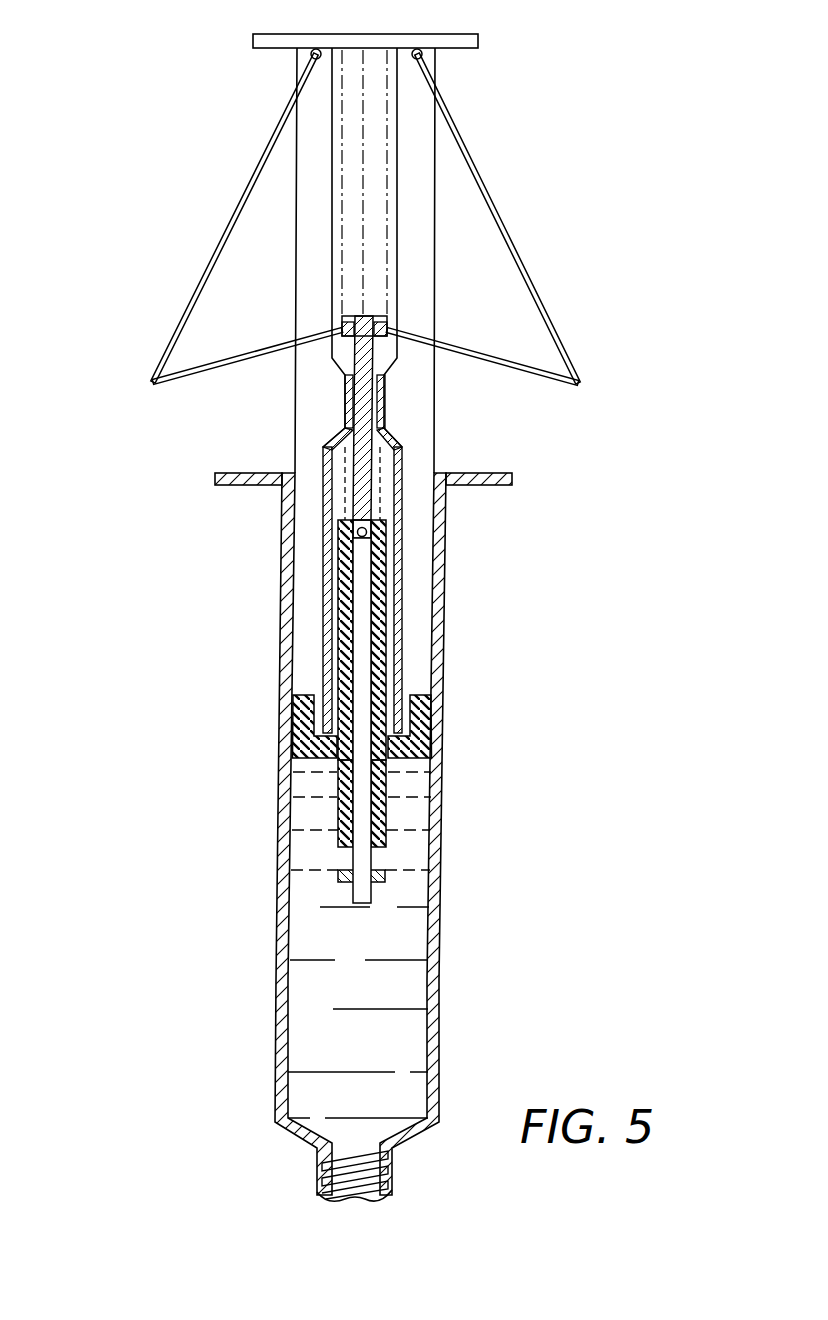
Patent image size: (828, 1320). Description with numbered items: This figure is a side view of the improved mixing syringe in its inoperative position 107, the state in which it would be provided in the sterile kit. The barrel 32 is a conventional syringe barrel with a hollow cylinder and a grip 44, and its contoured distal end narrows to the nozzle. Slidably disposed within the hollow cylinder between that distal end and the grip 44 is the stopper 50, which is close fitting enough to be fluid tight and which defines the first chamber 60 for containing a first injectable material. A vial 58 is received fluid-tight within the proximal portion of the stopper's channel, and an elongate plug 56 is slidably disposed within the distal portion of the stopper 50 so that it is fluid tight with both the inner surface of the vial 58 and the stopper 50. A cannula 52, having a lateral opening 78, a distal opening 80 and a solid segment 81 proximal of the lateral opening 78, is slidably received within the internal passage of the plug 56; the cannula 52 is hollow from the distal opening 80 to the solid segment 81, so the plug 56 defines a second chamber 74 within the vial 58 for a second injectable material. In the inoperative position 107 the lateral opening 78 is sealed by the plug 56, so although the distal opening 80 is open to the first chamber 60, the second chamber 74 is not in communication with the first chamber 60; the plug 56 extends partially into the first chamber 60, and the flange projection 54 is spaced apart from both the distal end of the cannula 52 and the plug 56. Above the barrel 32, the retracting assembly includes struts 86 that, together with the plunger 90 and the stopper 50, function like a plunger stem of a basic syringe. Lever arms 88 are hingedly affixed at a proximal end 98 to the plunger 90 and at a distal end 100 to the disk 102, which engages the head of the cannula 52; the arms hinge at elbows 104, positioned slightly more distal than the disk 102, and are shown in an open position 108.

The barrel 32 is at (438, 1047).
The grip 44 is at (483, 473).
The stopper 50 is at (412, 722).
The cannula 52 is at (360, 797).
The flange projection 54 is at (382, 870).
The elongate plug 56 is at (343, 632).
The vial 58 is at (340, 600).
The first chamber 60 is at (307, 993).
The second chamber 74 is at (347, 473).
The lateral opening 78 is at (368, 535).
The distal opening 80 is at (370, 900).
The solid segment 81 is at (367, 410).
The struts 86 is at (307, 520).
The lever arms 88 is at (246, 190).
The plunger 90 is at (478, 41).
The proximal end 98 is at (311, 56).
The distal end 100 is at (393, 327).
The disk 102 is at (345, 324).
The elbow 104 is at (150, 382).
The inoperative position 107 is at (550, 646).
The open position 108 is at (612, 316).